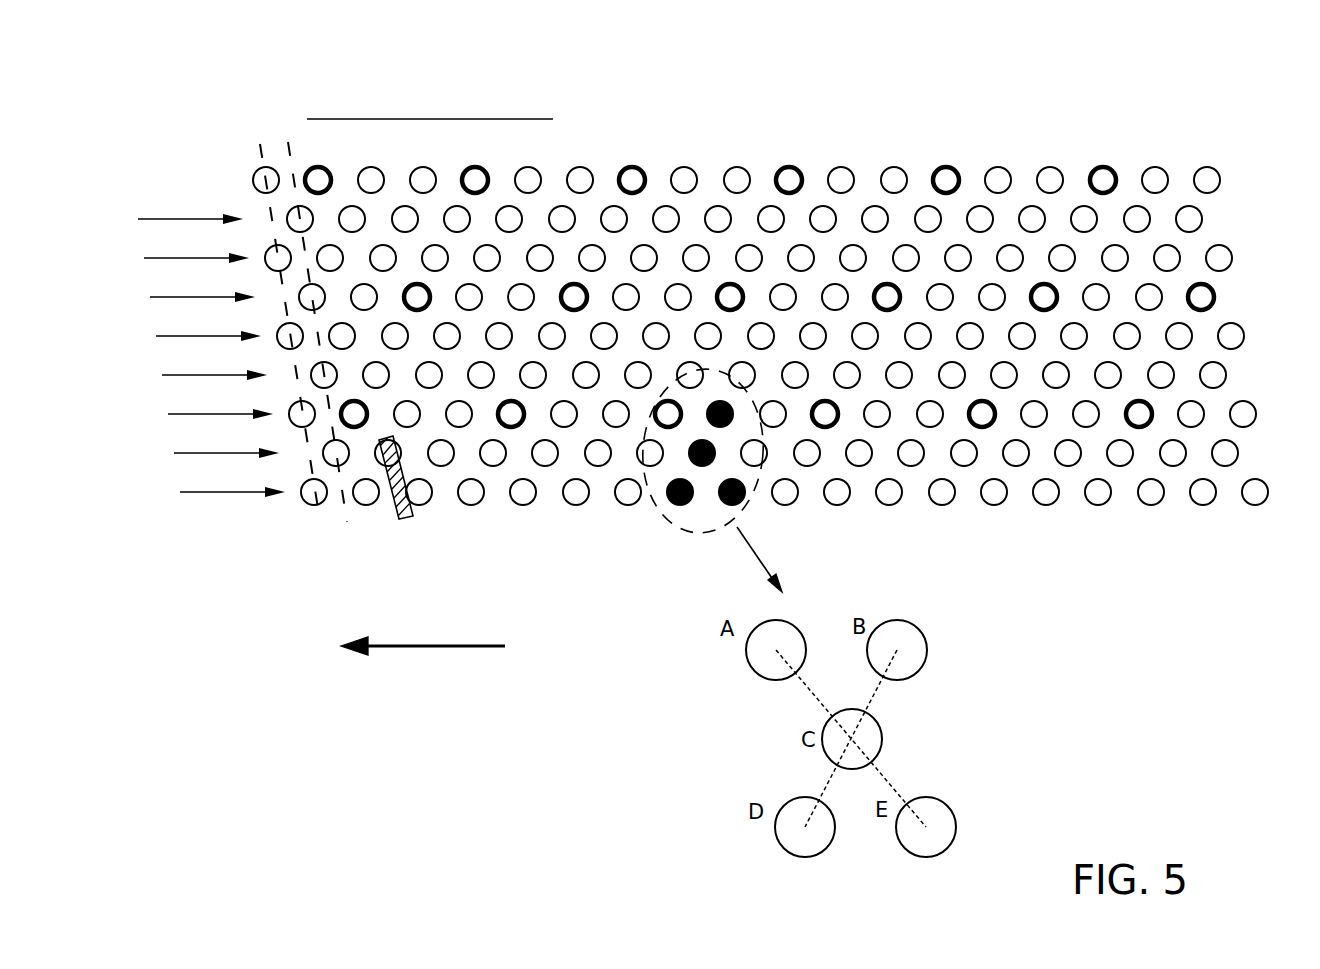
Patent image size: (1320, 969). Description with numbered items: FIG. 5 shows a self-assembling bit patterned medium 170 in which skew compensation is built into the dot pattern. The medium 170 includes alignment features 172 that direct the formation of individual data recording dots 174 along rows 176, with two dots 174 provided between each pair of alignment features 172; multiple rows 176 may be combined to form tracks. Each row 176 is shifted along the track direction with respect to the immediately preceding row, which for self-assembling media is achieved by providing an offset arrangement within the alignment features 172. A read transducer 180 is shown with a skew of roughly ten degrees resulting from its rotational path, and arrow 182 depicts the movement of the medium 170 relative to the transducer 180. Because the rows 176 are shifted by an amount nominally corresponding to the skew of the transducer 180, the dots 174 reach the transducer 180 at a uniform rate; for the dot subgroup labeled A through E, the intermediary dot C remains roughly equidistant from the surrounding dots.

The medium 170 is at (1218, 53).
The alignment features 172 is at (1103, 165).
The data recording dots 174 is at (843, 167).
The rows 176 is at (1234, 213).
The read transducer 180 is at (408, 520).
The arrow 182 is at (433, 648).